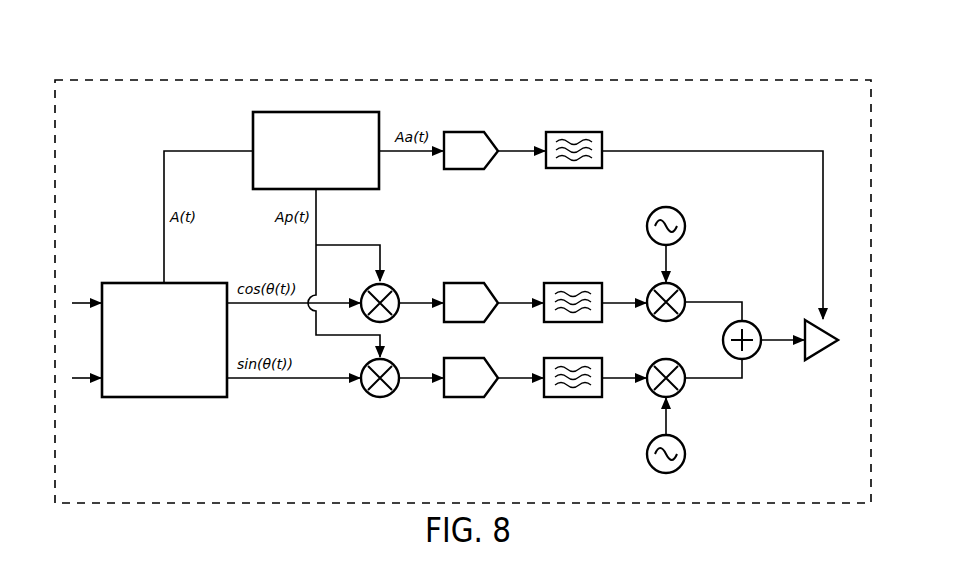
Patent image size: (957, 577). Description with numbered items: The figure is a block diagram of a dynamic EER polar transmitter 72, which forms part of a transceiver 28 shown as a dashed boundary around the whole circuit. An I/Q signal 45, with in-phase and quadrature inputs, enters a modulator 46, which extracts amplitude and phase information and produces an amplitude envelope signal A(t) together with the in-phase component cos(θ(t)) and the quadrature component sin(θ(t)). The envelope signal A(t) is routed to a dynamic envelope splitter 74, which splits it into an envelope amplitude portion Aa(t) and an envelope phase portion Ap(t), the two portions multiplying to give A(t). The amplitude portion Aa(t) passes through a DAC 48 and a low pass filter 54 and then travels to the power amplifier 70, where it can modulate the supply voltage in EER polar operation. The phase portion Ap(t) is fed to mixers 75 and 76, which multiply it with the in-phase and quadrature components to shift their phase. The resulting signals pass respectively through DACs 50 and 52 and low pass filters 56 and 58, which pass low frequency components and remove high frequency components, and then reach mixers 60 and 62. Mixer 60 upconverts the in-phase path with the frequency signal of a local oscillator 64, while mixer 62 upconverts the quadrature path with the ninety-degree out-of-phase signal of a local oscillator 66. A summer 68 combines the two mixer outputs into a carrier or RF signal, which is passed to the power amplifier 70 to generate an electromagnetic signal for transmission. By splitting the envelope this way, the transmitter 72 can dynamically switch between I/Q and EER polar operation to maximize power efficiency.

The transceiver 28 is at (762, 80).
The dynamic EER polar transmitter 72 is at (128, 176).
The signal 45 is at (84, 404).
The modulator 46 is at (200, 283).
The dynamic envelope splitter 74 is at (365, 112).
The digital-to-analog converter 48 is at (458, 132).
The digital-to-analog converter 50 is at (462, 283).
The digital-to-analog converter 52 is at (462, 358).
The low pass filter 54 is at (577, 132).
The low pass filter 56 is at (575, 283).
The low pass filter 58 is at (575, 358).
The mixer 60 is at (680, 288).
The mixer 62 is at (680, 392).
The local oscillator 64 is at (677, 211).
The local oscillator 66 is at (672, 472).
The summer 68 is at (755, 326).
The power amplifier 70 is at (820, 352).
The mixer 75 is at (394, 289).
The mixer 76 is at (394, 364).